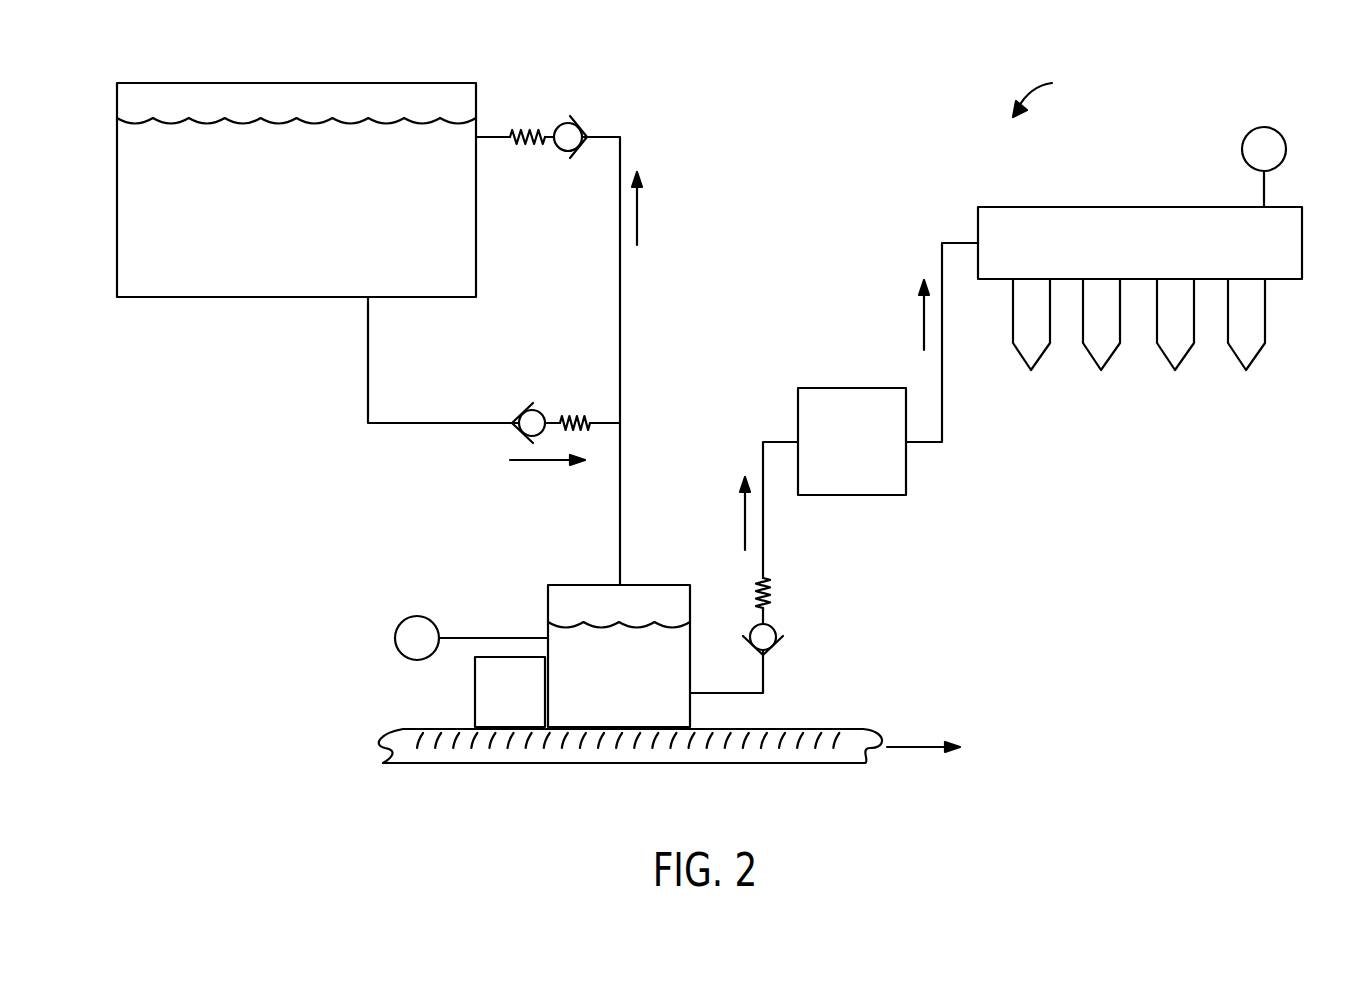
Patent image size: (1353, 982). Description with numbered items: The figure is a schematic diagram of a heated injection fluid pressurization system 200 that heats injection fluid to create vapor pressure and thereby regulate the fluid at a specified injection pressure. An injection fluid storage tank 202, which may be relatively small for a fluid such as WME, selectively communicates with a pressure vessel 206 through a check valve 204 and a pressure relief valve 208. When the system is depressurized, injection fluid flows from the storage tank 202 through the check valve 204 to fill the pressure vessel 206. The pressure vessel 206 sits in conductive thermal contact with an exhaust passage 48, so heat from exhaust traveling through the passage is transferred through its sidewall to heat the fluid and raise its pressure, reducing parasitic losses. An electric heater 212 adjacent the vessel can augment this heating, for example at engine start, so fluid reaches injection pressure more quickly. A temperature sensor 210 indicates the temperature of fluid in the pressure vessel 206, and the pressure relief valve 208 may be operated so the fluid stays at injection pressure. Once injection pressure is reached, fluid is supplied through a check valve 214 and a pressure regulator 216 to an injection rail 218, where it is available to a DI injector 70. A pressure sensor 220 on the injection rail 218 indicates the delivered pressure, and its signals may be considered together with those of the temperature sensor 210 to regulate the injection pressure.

The heated injection fluid pressurization system 200 is at (1053, 93).
The injection fluid storage tank 202 is at (225, 297).
The check valve 204 is at (540, 408).
The pressure vessel 206 is at (655, 585).
The pressure relief valve 208 is at (578, 126).
The temperature sensor 210 is at (420, 617).
The electric heater 212 is at (491, 703).
The check valve 214 is at (772, 622).
The pressure regulator 216 is at (834, 453).
The injection rail 218 is at (1119, 256).
The pressure sensor 220 is at (1264, 127).
The DI injector 70 is at (1267, 302).
The exhaust passage 48 is at (815, 765).